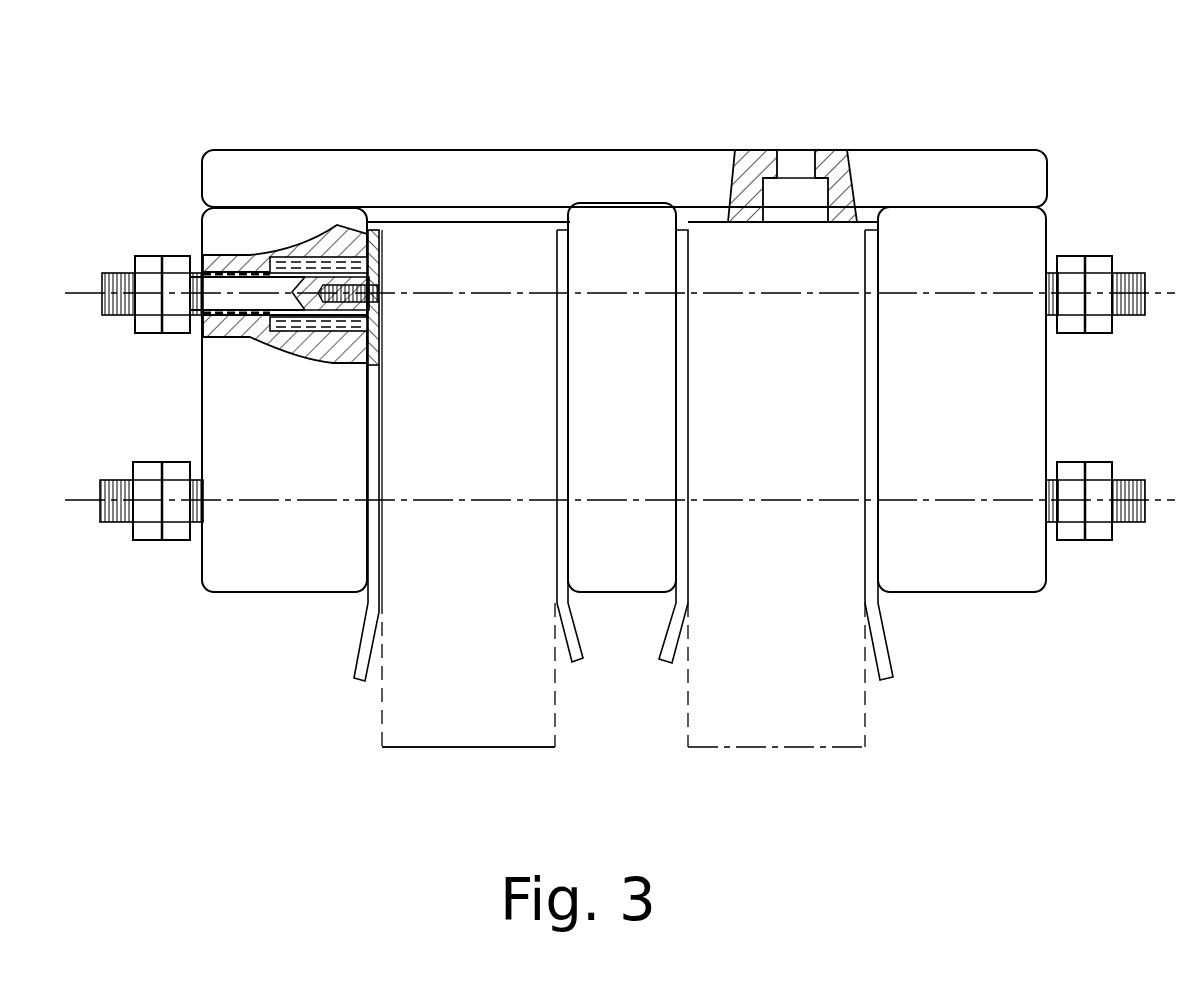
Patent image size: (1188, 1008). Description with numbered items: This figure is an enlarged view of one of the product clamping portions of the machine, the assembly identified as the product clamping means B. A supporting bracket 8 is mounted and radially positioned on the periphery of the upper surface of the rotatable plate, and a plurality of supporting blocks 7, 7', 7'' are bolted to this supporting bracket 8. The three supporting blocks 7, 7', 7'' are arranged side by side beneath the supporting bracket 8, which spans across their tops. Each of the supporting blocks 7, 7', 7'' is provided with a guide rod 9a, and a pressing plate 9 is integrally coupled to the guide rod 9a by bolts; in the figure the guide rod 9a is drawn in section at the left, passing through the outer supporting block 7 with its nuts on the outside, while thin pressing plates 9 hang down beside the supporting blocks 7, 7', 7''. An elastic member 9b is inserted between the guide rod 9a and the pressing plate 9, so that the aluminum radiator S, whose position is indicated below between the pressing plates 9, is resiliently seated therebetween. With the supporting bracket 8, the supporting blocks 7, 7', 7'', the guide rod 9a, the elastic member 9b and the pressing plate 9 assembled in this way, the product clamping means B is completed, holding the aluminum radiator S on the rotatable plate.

The supporting block 7 is at (280, 450).
The supporting block 7' is at (622, 493).
The supporting block 7'' is at (962, 443).
The supporting bracket 8 is at (715, 158).
The pressing plate 9 is at (367, 643).
The guide rod 9a is at (222, 303).
The elastic member 9b is at (280, 345).
The aluminum radiator S is at (477, 708).
The product clamping means B is at (1027, 128).